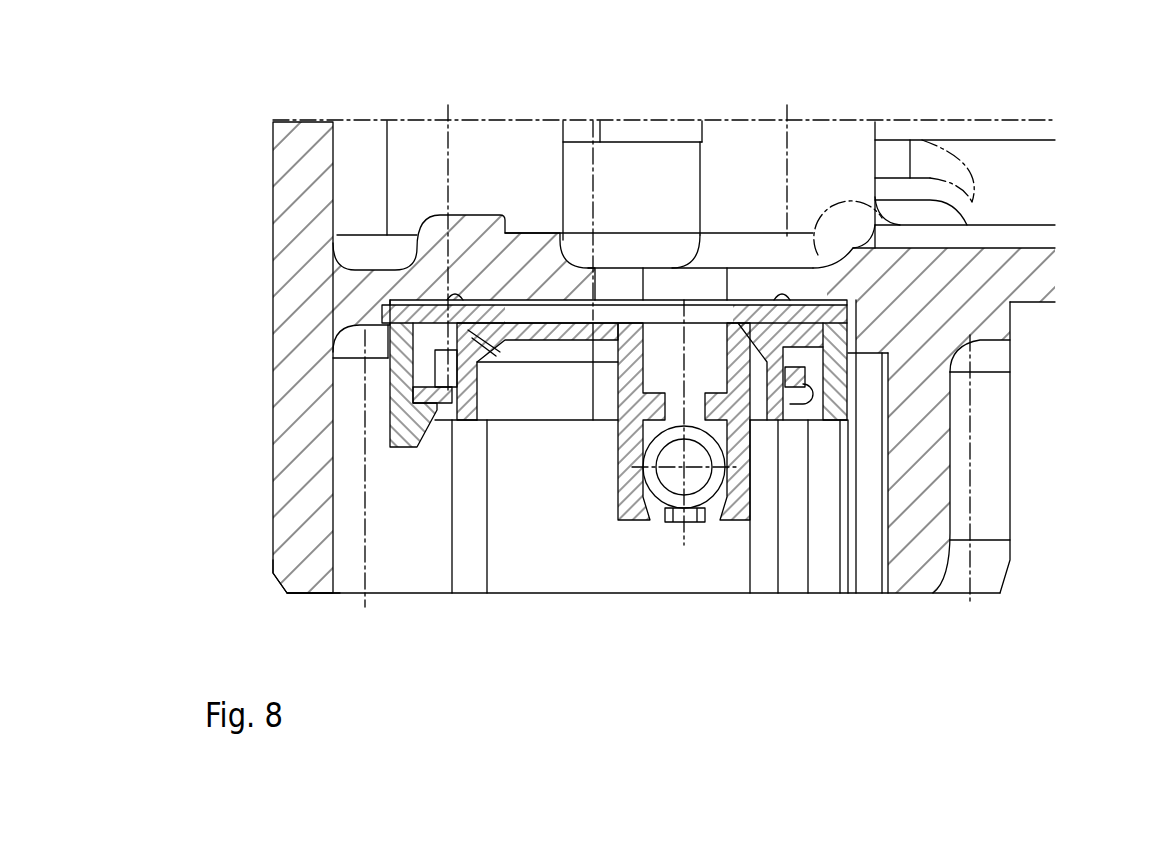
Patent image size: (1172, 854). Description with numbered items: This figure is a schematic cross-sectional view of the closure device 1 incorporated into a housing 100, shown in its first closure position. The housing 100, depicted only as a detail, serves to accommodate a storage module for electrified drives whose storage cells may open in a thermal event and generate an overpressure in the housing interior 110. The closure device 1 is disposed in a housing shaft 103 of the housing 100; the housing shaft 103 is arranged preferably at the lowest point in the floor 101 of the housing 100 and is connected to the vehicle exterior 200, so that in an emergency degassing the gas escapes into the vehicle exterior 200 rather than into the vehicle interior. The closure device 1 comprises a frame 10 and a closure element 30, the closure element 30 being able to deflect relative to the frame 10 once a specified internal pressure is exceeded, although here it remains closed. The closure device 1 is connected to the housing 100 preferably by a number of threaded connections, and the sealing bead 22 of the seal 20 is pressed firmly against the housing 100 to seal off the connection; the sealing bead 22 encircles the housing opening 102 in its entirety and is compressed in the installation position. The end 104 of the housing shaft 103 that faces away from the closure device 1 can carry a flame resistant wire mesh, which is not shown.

The closure device 1 is at (605, 487).
The frame 10 is at (848, 343).
The seal 20 is at (748, 313).
The sealing bead 22 is at (455, 296).
The closure element 30 is at (738, 524).
The housing 100 is at (303, 207).
The floor 101 is at (1015, 282).
The housing opening 102 is at (506, 228).
The housing shaft 103 is at (923, 450).
The end 104 is at (334, 590).
The housing interior 110 is at (503, 176).
The vehicle exterior 200 is at (628, 674).